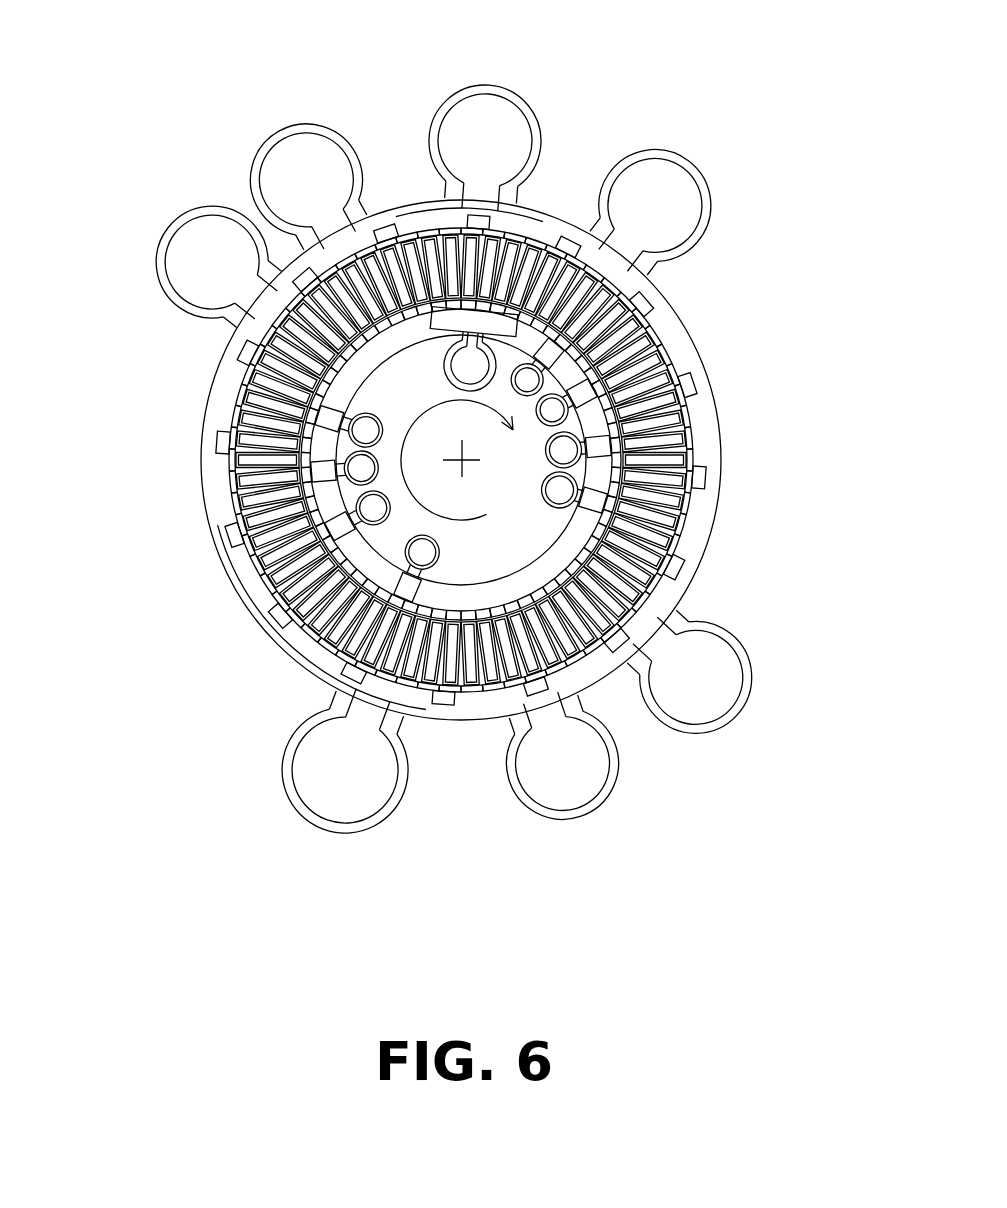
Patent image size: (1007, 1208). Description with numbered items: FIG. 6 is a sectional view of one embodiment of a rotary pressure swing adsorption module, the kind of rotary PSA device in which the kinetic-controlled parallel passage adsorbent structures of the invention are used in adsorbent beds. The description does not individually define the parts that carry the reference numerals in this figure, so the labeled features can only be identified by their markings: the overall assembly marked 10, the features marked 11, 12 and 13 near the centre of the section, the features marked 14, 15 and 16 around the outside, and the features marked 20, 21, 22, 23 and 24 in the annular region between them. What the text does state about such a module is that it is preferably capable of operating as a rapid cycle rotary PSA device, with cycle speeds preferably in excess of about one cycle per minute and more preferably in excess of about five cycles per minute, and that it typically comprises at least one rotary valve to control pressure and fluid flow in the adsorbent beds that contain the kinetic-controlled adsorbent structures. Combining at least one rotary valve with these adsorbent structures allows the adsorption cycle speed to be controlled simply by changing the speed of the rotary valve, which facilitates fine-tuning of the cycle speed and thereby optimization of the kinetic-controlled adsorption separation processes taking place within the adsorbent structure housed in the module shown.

The electric motor 10 is at (198, 71).
The rotor 11 is at (292, 630).
The rotor axis 12 is at (466, 464).
The rotation direction 13 is at (419, 410).
The housing 14 is at (414, 197).
The mounting lug 15 is at (246, 858).
The mounting lug 16 is at (611, 52).
The stator 20 is at (695, 525).
The stator tab 21 is at (633, 300).
The inner stator ring 22 is at (640, 612).
The stator sleeve 23 is at (687, 432).
The stator teeth 24 is at (258, 577).